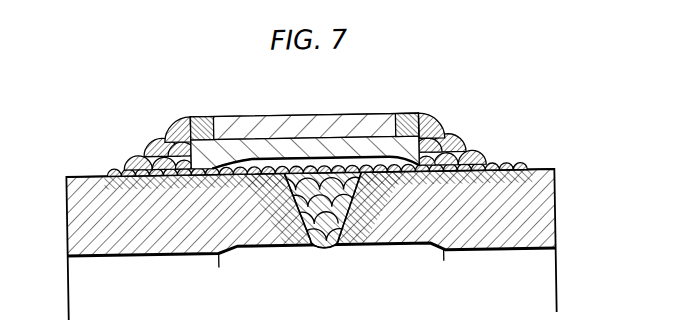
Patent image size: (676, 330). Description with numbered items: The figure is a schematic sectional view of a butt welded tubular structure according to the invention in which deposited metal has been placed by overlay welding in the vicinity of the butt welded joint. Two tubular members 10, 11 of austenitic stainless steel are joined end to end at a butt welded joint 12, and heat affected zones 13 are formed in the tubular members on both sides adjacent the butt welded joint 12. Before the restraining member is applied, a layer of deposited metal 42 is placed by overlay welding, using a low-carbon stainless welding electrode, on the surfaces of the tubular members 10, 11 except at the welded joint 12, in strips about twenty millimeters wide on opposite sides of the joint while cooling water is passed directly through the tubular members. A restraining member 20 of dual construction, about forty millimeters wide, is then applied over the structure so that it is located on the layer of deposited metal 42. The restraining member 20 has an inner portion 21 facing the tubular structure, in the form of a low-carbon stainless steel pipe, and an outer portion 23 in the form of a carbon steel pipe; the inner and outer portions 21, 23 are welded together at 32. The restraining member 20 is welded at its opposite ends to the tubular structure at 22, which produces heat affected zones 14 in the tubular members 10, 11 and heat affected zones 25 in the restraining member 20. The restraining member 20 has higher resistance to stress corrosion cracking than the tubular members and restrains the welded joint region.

The tubular member 10 is at (138, 245).
The tubular member 11 is at (497, 238).
The butt welded joint 12 is at (327, 247).
The heat affected zones 13 is at (289, 237).
The heat affected zones 14 is at (102, 173).
The restraining member 20 is at (327, 112).
The inner portion 21 is at (244, 148).
The weld 22 is at (157, 144).
The outer portion 23 is at (277, 124).
The heat affected zones 25 is at (195, 118).
The weld 32 is at (216, 124).
The deposited metal 42 is at (103, 172).